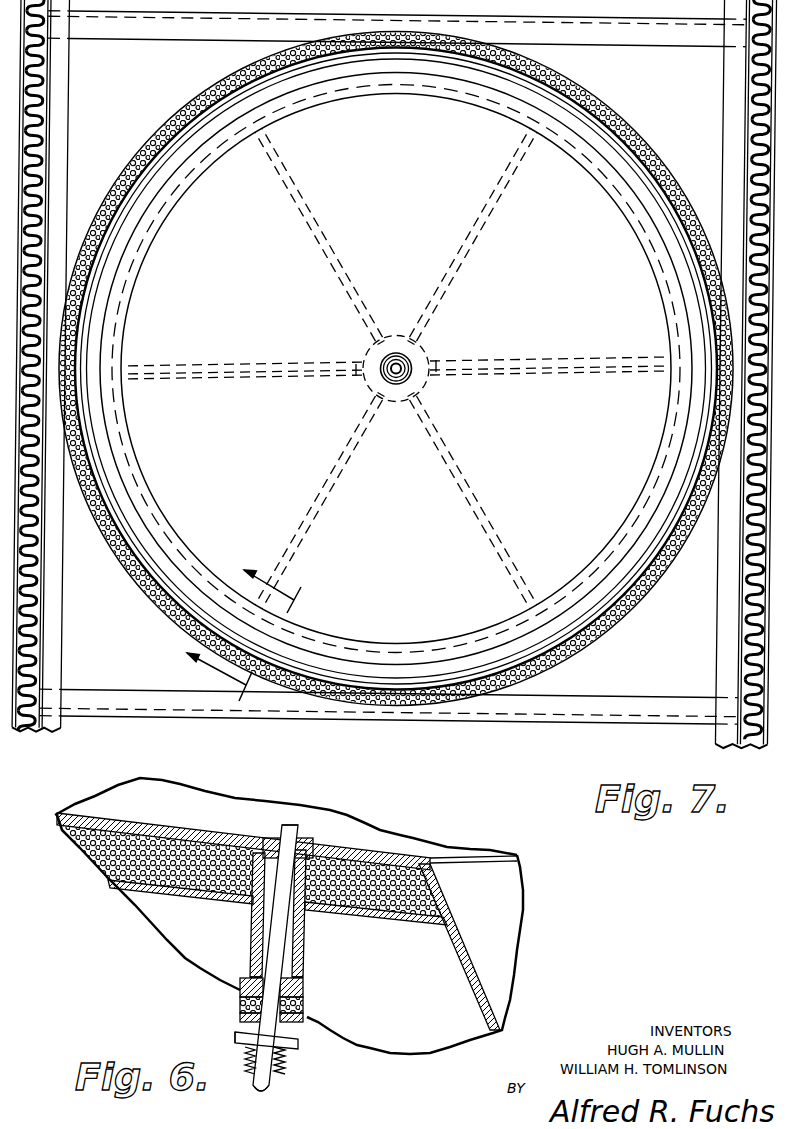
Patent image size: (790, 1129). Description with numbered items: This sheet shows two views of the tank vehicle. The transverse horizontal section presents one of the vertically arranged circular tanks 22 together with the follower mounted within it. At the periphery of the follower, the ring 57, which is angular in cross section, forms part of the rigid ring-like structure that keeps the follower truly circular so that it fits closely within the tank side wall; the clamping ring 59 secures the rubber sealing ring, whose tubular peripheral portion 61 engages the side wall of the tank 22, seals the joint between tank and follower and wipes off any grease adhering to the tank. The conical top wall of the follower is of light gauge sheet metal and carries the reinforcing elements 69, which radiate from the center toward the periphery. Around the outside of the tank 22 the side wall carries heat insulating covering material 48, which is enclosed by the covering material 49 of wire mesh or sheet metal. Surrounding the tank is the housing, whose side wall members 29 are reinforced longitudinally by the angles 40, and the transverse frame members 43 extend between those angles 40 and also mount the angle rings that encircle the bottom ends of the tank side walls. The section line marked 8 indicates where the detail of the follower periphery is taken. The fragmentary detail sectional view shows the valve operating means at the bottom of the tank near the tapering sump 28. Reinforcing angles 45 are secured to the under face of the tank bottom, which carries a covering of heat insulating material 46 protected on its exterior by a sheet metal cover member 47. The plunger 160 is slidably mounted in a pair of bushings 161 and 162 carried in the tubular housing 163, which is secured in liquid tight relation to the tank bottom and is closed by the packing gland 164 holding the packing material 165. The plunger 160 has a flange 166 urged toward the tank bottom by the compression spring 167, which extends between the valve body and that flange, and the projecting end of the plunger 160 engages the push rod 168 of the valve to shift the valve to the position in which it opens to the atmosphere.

In FIG. 7, the tank 22 is at (100, 485).
In FIG. 7, the side wall member 29 is at (43, 134).
In FIG. 7, the angle 40 is at (53, 622).
In FIG. 7, the transverse frame member 43 is at (623, 44).
In FIG. 7, the heat insulating covering material 48 is at (662, 577).
In FIG. 7, the covering material 49 is at (602, 637).
In FIG. 7, the ring 57 is at (660, 472).
In FIG. 7, the clamping ring 59 is at (667, 507).
In FIG. 7, the tubular peripheral portion 61 is at (660, 540).
In FIG. 7, the reinforcing element 69 is at (302, 192).
In FIG. 7, the section line 8- 8 is at (244, 628).
In FIG. 6, the sump 28 is at (460, 940).
In FIG. 6, the angle 45 is at (193, 832).
In FIG. 6, the heat insulating material 46 is at (360, 893).
In FIG. 6, the cover member 47 is at (407, 910).
In FIG. 6, the plunger 160 is at (280, 906).
In FIG. 6, the bushing 161 is at (300, 834).
In FIG. 6, the bushing 162 is at (303, 973).
In FIG. 6, the tubular housing 163 is at (252, 941).
In FIG. 6, the packing gland 164 is at (304, 990).
In FIG. 6, the packing material 165 is at (304, 1008).
In FIG. 6, the flange 166 is at (299, 1044).
In FIG. 6, the compression spring 167 is at (236, 1037).
In FIG. 6, the push rod 168 is at (270, 1083).